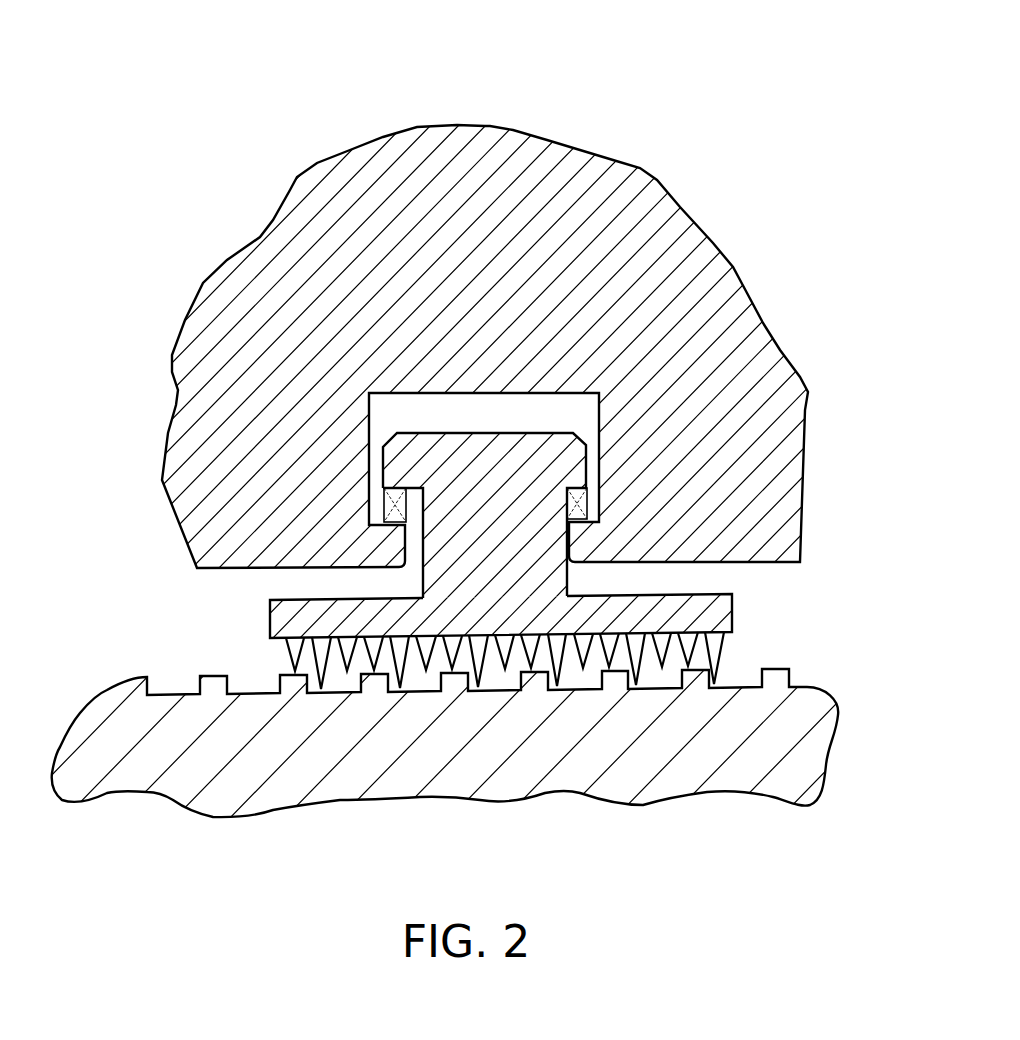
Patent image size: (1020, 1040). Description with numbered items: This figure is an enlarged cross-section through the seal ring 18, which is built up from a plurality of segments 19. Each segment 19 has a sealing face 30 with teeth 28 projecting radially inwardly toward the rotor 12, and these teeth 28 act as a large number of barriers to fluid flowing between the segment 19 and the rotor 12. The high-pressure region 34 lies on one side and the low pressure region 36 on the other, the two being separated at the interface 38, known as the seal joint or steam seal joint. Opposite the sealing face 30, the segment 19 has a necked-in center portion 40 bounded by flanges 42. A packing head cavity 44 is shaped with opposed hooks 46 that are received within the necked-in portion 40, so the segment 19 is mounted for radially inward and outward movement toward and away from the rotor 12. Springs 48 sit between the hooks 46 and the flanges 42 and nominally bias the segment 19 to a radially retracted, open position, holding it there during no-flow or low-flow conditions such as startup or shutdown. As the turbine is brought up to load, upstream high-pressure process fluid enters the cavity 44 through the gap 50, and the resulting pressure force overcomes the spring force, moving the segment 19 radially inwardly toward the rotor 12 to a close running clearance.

The rotor 12 is at (812, 707).
The seal ring 18 is at (421, 414).
The segment 19 is at (477, 457).
The teeth 28 is at (325, 657).
The sealing face 30 is at (722, 630).
The high-pressure region 34 is at (120, 517).
The low pressure region 36 is at (867, 495).
The interface 38 is at (567, 548).
The necked-in center portion 40 is at (527, 583).
The flanges 42 is at (397, 492).
The packing head cavity 44 is at (550, 415).
The hooks 46 is at (613, 542).
The springs 48 is at (383, 500).
The gap 50 is at (416, 552).